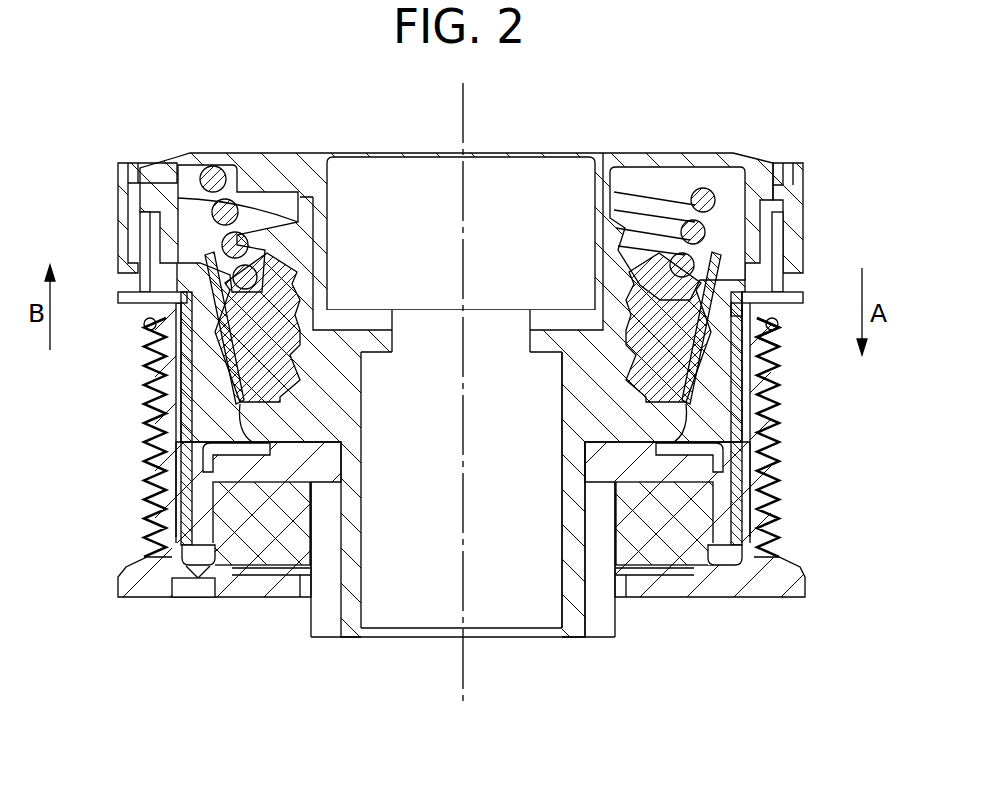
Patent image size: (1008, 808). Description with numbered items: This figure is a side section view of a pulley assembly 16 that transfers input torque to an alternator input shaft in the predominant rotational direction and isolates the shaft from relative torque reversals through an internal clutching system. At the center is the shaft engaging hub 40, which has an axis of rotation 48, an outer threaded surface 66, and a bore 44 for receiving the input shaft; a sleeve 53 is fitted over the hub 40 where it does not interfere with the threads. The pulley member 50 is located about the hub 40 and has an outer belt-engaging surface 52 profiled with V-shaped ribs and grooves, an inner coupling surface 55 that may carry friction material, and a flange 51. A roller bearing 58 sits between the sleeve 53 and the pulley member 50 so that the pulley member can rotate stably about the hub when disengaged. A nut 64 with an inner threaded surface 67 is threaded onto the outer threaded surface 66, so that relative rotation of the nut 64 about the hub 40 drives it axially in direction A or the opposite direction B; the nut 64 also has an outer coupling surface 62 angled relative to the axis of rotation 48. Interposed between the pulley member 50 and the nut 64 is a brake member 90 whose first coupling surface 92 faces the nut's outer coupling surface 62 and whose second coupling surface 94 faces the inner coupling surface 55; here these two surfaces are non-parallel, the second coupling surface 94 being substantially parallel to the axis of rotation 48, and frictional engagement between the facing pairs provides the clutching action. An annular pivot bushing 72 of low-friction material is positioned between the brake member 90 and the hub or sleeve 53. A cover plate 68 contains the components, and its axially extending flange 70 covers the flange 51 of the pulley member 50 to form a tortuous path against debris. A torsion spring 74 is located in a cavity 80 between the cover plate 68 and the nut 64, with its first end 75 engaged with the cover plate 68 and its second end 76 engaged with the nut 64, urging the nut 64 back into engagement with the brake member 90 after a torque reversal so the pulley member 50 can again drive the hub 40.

The pulley assembly 16 is at (681, 695).
The shaft engaging hub 40 is at (572, 565).
The bore 44 is at (405, 605).
The axis of rotation 48 is at (463, 678).
The pulley member 50 is at (776, 585).
The flange 51 is at (798, 215).
The belt-engaging surface 52 is at (775, 412).
The sleeve 53 is at (598, 634).
The inner coupling surface 55 is at (764, 366).
The roller bearing 58 is at (260, 518).
The outer coupling surface 62 is at (237, 390).
The nut 64 is at (245, 340).
The outer threaded surface 66 is at (640, 195).
The inner threaded surface 67 is at (240, 448).
The cover plate 68 is at (288, 160).
The axially extending flange 70 is at (124, 238).
The pivot bushing 72 is at (690, 480).
The torsion spring 74 is at (165, 195).
The first end of the spring 75 is at (207, 167).
The second end of the spring 76 is at (150, 298).
The cavity 80 is at (742, 195).
The brake member 90 is at (790, 297).
The first coupling surface 92 is at (778, 242).
The second coupling surface 94 is at (746, 310).